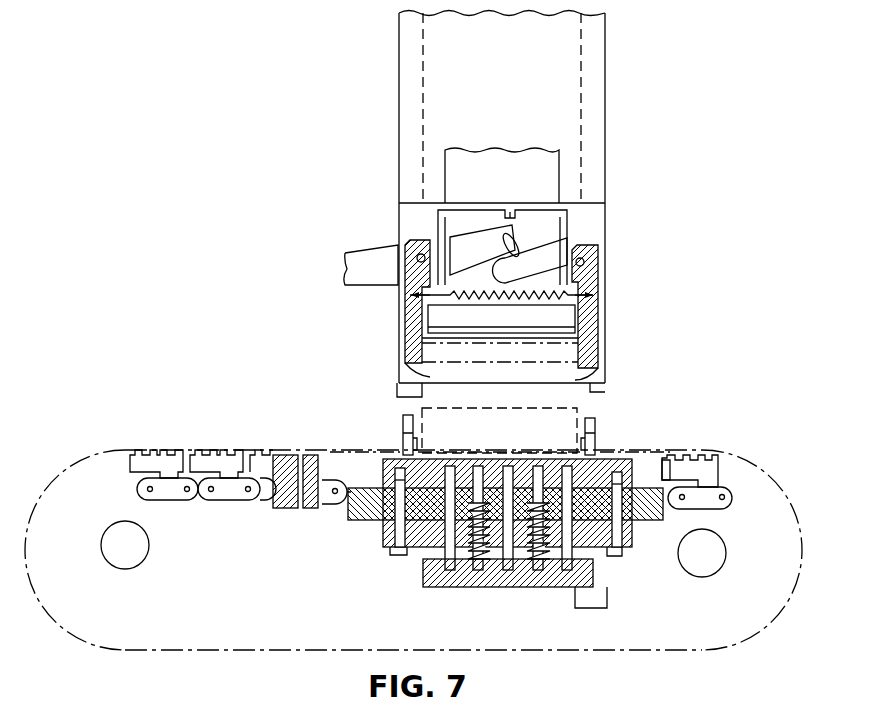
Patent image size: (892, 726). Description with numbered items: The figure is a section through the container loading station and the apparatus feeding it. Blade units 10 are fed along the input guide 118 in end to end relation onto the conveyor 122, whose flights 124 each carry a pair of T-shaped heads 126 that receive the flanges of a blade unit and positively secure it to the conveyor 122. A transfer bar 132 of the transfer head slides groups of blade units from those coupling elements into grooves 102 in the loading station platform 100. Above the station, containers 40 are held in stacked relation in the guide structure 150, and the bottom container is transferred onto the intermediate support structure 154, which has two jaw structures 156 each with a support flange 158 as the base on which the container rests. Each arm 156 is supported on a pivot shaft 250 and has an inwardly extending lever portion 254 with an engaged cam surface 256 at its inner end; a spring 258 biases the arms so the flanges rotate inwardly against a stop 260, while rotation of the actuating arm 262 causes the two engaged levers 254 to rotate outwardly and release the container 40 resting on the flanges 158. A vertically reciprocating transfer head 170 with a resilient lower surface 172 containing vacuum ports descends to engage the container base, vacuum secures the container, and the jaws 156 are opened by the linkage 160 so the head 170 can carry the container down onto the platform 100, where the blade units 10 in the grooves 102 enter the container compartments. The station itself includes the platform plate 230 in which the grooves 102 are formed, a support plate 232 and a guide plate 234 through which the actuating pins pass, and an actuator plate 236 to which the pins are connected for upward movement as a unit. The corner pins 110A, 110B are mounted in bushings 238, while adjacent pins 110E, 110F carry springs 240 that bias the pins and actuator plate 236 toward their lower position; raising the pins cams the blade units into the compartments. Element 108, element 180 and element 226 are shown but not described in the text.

The blade unit 10 is at (302, 447).
The container 40 is at (492, 372).
The loading station platform 100 is at (392, 455).
The grooves 102 is at (508, 464).
The pin 108 is at (450, 464).
The corner actuating pin 110A is at (445, 557).
The corner actuating pin 110B is at (575, 558).
The spring-biased actuating pin 110E is at (478, 575).
The spring-biased actuating pin 110F is at (545, 575).
The input guide 118 is at (285, 510).
The conveyor 122 is at (787, 497).
The flight 124 is at (716, 507).
The T-shaped head 126 is at (707, 458).
The transfer bar 132 is at (505, 408).
The guide structure 150 is at (607, 73).
The intermediate support structure 154 is at (607, 272).
The jaw structure 156 is at (597, 355).
The support flange 158 is at (580, 370).
The linkage 160 is at (343, 252).
The transfer head 170 is at (567, 318).
The resilient lower surface 172 is at (575, 332).
The locating pin 180 is at (595, 420).
The lug 226 is at (398, 392).
The platform plate 230 is at (600, 460).
The support plate 232 is at (366, 520).
The guide plate 234 is at (390, 547).
The actuator plate 236 is at (425, 570).
The bushing 238 is at (567, 464).
The spring 240 is at (530, 562).
The pivot shaft 250 is at (597, 257).
The lever portion 254 is at (479, 256).
The cam surface 256 is at (517, 252).
The spring 258 is at (428, 316).
The stop 260 is at (510, 216).
The actuating arm 262 is at (348, 268).